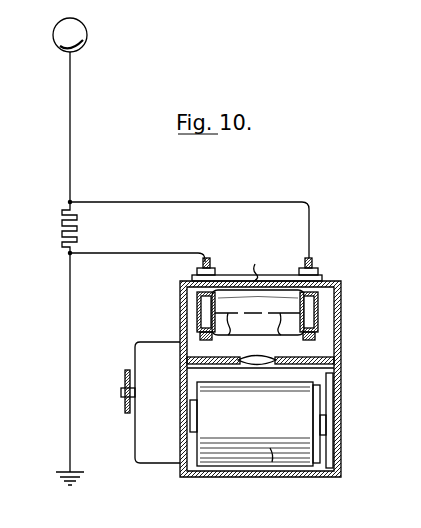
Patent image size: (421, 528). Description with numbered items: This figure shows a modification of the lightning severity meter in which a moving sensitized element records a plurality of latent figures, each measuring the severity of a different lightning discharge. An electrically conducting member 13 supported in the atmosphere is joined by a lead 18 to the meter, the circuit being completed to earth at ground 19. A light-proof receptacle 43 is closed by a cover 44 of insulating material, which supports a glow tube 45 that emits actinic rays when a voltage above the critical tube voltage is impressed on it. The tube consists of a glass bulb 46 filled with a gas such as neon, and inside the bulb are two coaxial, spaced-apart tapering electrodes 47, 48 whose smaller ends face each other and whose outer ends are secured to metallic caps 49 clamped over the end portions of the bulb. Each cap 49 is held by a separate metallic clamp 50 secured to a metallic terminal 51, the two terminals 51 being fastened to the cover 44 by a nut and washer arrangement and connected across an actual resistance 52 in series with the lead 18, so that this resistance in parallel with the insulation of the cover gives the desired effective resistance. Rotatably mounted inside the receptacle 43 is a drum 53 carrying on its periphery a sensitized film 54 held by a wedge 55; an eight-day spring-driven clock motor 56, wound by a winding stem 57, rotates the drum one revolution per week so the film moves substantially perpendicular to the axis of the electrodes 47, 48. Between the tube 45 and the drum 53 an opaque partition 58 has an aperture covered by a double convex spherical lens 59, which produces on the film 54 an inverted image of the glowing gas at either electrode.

The electrically conducting member 13 is at (86, 32).
The lead 18 is at (72, 95).
The ground connection 19 is at (78, 479).
The light-proof receptacle 43 is at (343, 350).
The cover 44 is at (242, 275).
The glow tube 45 is at (266, 353).
The glass bulb 46 is at (268, 292).
The tapering electrode 47 is at (230, 333).
The tapering electrode 48 is at (282, 333).
The metallic cap 49 is at (197, 306).
The metallic clamp 50 is at (200, 337).
The metallic terminal 51 is at (203, 264).
The actual resistance 52 is at (61, 226).
The drum 53 is at (315, 402).
The sensitized film 54 is at (255, 424).
The wedge 55 is at (272, 462).
The clock motor 56 is at (135, 345).
The winding stem 57 is at (121, 391).
The opaque partition 58 is at (201, 349).
The double convex spherical lens 59 is at (262, 364).